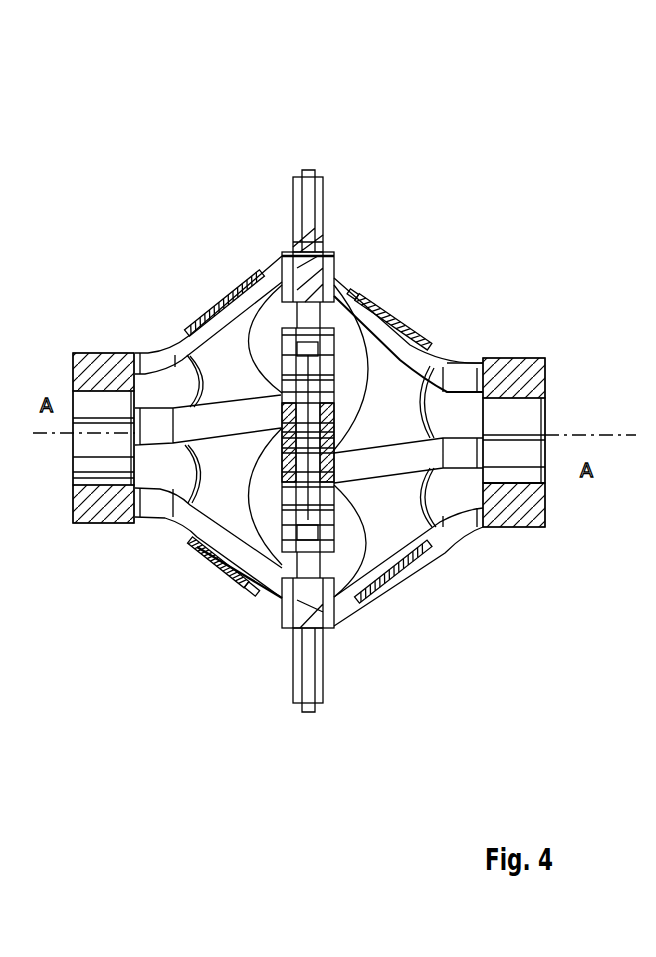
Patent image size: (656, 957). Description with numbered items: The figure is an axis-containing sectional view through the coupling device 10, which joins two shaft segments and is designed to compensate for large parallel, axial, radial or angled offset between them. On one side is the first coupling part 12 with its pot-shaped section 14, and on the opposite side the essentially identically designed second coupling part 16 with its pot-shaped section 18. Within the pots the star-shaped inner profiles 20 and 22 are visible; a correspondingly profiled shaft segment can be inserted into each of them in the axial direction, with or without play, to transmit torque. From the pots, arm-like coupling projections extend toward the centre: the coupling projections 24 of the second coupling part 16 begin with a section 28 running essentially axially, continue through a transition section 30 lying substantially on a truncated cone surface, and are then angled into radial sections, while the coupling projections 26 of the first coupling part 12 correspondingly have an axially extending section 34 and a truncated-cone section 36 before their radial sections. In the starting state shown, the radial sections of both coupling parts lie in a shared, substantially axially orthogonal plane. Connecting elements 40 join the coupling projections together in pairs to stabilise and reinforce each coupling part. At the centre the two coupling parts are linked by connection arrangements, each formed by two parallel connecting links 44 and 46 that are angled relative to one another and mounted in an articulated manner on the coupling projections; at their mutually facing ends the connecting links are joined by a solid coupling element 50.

The coupling device 10 is at (463, 160).
The first coupling part 12 is at (531, 340).
The pot-shaped section 14 is at (523, 380).
The second coupling part 16 is at (69, 529).
The pot-shaped section 18 is at (76, 494).
The star-shaped inner profile 20 is at (110, 435).
The star-shaped inner profile 22 is at (515, 408).
The coupling projection 24 is at (173, 328).
The coupling projection 26 is at (470, 340).
The axially extending section 28 is at (98, 352).
The transition section 30 is at (188, 548).
The axially extending section 34 is at (510, 528).
The truncated cone section 36 is at (411, 328).
The connecting element 40 is at (230, 583).
The connecting link 44 is at (283, 252).
The connecting link 46 is at (323, 235).
The coupling element 50 is at (280, 603).